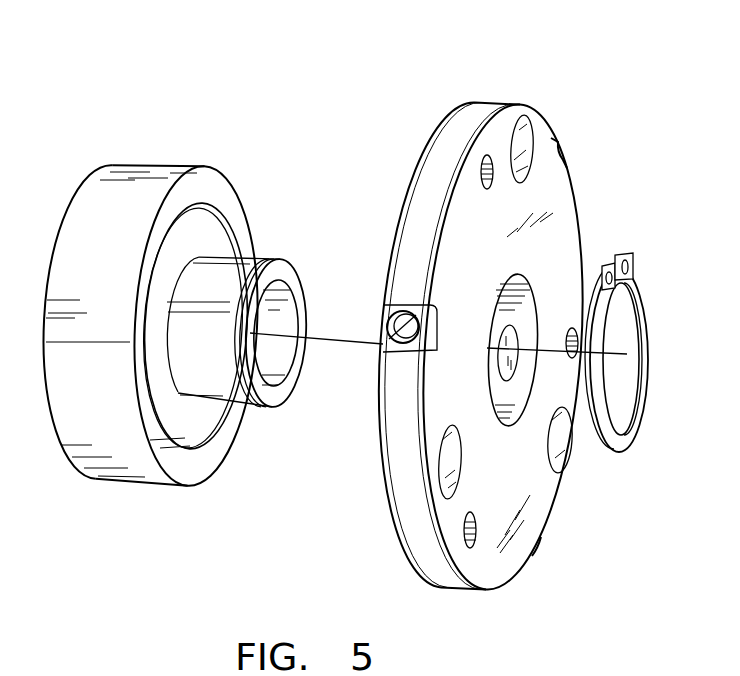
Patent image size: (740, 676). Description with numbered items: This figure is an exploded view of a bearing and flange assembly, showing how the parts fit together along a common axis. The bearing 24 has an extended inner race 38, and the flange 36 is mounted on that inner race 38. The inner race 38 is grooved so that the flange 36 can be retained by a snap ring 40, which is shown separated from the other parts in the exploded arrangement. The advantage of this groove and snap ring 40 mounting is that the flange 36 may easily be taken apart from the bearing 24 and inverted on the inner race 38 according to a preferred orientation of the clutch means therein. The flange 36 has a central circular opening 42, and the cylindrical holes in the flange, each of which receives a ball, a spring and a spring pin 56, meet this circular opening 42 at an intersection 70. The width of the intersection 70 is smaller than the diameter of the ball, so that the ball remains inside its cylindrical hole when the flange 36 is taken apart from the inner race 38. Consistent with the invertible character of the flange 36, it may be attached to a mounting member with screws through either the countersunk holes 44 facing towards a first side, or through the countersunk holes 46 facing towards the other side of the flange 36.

The bearing 24 is at (152, 166).
The extended inner race 38 is at (227, 255).
The flange 36 is at (448, 138).
The countersunk holes 44 is at (530, 140).
The countersunk holes 46 is at (491, 154).
The circular opening 42 is at (537, 305).
The intersection 70 is at (518, 367).
The spring pin 56 is at (386, 350).
The snap ring 40 is at (643, 292).